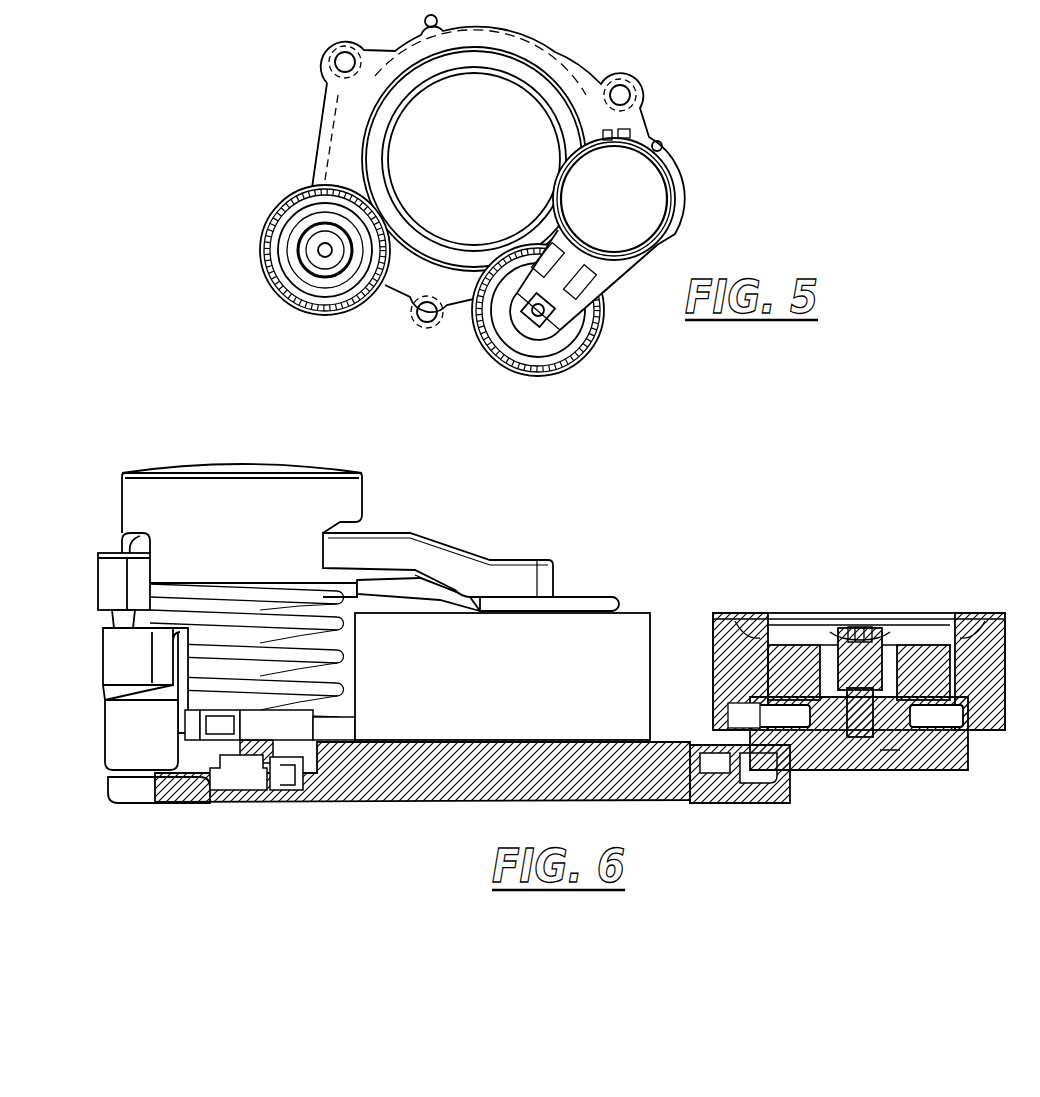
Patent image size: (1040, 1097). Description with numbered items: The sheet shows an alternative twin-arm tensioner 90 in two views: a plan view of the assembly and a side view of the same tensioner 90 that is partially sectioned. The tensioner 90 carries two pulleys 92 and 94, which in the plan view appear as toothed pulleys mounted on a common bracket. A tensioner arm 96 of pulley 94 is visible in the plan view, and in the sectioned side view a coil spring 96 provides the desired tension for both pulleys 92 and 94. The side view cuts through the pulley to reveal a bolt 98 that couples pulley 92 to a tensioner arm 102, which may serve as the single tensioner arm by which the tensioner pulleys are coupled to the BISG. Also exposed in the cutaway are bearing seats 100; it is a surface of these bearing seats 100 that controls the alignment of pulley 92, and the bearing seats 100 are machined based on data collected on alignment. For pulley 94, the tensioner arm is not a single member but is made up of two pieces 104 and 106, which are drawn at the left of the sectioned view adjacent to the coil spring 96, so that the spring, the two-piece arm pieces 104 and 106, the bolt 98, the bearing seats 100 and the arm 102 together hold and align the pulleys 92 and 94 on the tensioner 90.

In FIG. 5, the tensioner 90 is at (451, 203).
In FIG. 6, the tensioner 90 is at (701, 515).
In FIG. 5, the pulley 92 is at (302, 260).
In FIG. 6, the pulley 92 is at (992, 614).
In FIG. 5, the pulley 94 is at (553, 330).
In FIG. 6, the pulley 94 is at (513, 687).
In FIG. 5, the tensioner arm 96 is at (588, 275).
In FIG. 6, the tensioner arm 96 is at (277, 700).
In FIG. 6, the bolt 98 is at (882, 630).
In FIG. 6, the bearing seats 100 is at (893, 713).
In FIG. 6, the tensioner arm 102 is at (888, 752).
In FIG. 6, the tensioner arm piece 104 is at (130, 735).
In FIG. 6, the tensioner arm piece 106 is at (385, 532).